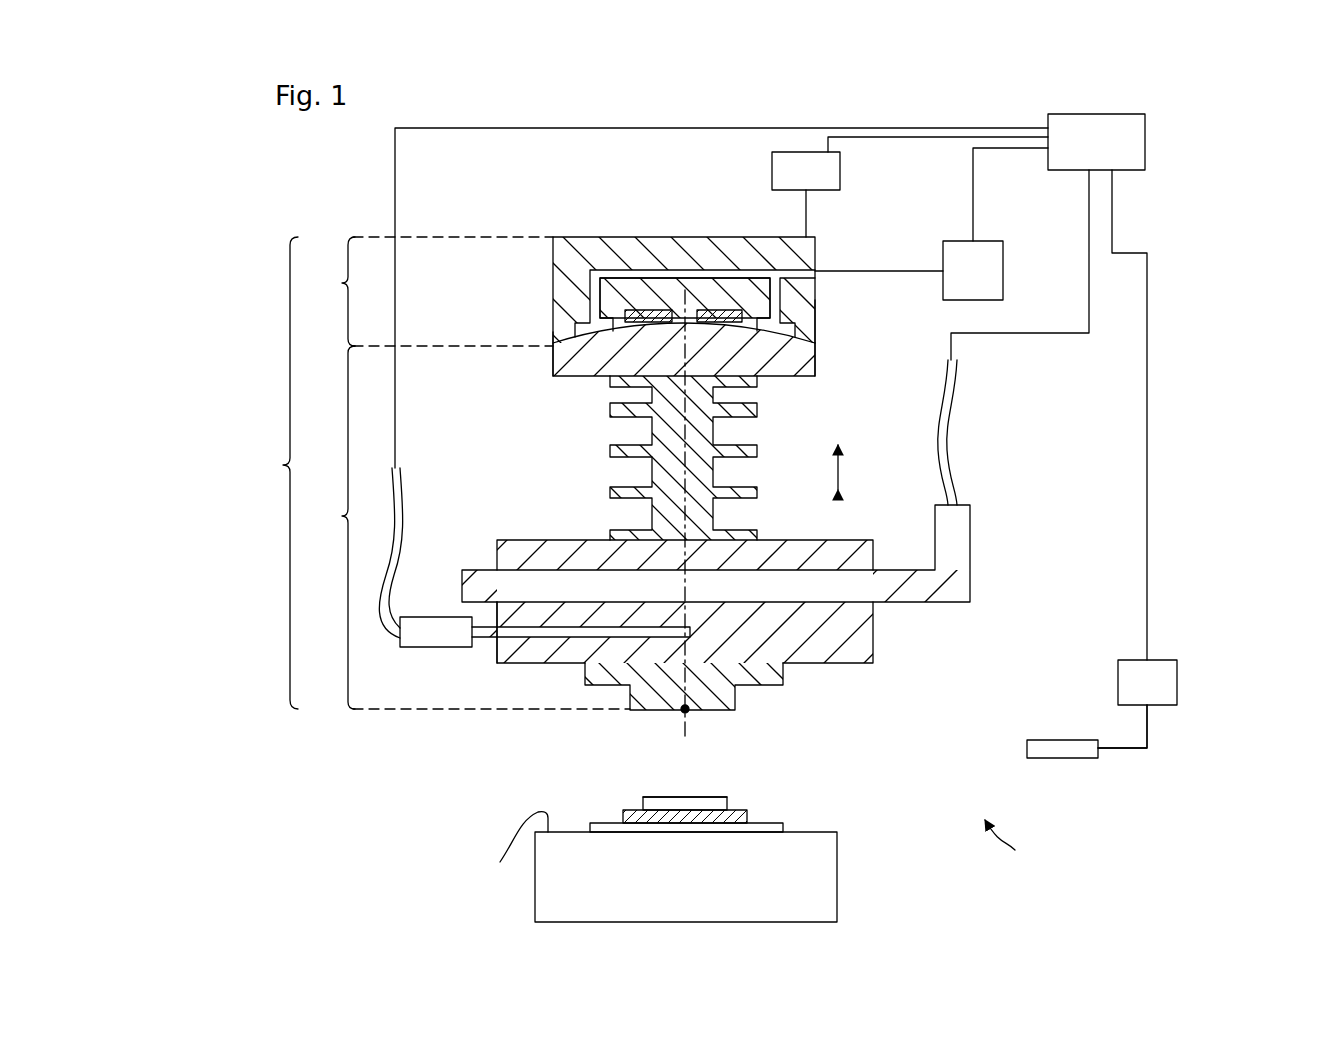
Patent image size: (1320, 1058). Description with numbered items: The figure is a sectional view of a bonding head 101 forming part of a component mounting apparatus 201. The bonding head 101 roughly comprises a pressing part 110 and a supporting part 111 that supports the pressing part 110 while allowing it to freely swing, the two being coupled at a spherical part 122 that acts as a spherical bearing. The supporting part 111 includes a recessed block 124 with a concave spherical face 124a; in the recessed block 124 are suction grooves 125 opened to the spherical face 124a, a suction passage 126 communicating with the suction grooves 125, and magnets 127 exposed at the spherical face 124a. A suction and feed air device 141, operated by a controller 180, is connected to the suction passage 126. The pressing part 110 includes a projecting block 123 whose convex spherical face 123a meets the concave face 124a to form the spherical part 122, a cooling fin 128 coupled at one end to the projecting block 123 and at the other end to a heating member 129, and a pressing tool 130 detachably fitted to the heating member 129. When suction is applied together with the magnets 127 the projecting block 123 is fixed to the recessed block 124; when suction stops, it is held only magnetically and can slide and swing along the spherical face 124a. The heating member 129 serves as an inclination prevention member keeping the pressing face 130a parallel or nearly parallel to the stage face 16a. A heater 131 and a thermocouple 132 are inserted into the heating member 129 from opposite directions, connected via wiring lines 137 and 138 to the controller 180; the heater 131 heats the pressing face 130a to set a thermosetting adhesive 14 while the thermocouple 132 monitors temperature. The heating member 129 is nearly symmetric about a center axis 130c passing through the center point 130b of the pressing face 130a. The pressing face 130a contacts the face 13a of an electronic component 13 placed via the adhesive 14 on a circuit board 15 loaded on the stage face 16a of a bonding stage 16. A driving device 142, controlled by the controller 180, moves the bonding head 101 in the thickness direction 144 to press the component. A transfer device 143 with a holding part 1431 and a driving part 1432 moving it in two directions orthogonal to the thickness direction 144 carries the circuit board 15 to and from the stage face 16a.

The electronic component 13 is at (730, 803).
The face to be pressed 13a is at (660, 797).
The thermosetting adhesive 14 is at (750, 817).
The circuit board 15 is at (785, 828).
The bonding stage 16 is at (815, 882).
The stage face 16a is at (503, 852).
The bonding head 101 is at (265, 473).
The pressing part 110 is at (326, 527).
The supporting part 111 is at (328, 291).
The spherical part 122 is at (553, 332).
The projecting block 123 is at (553, 365).
The convex spherical face 123a is at (815, 370).
The recessed block 124 is at (553, 262).
The concave spherical face 124a is at (815, 340).
The suction grooves 125 is at (612, 300).
The suction passage 126 is at (748, 271).
The magnets 127 is at (650, 310).
The cooling fin 128 is at (757, 408).
The heating member 129 is at (495, 665).
The pressing tool 130 is at (600, 665).
The pressing face 130a is at (645, 710).
The center point 130b is at (690, 710).
The center axis 130c is at (685, 455).
The heater 131 is at (915, 585).
The thermocouple 132 is at (497, 665).
The wiring line 137 is at (960, 392).
The wiring line 138 is at (403, 510).
The suction and feed air device 141 is at (1003, 270).
The driving device 142 is at (840, 170).
The transfer device 143 is at (1160, 765).
The holding part 1431 is at (1063, 758).
The driving part 1432 is at (1177, 680).
The thickness direction 144 is at (840, 468).
The controller 180 is at (1147, 140).
The component mounting apparatus 201 is at (1075, 888).